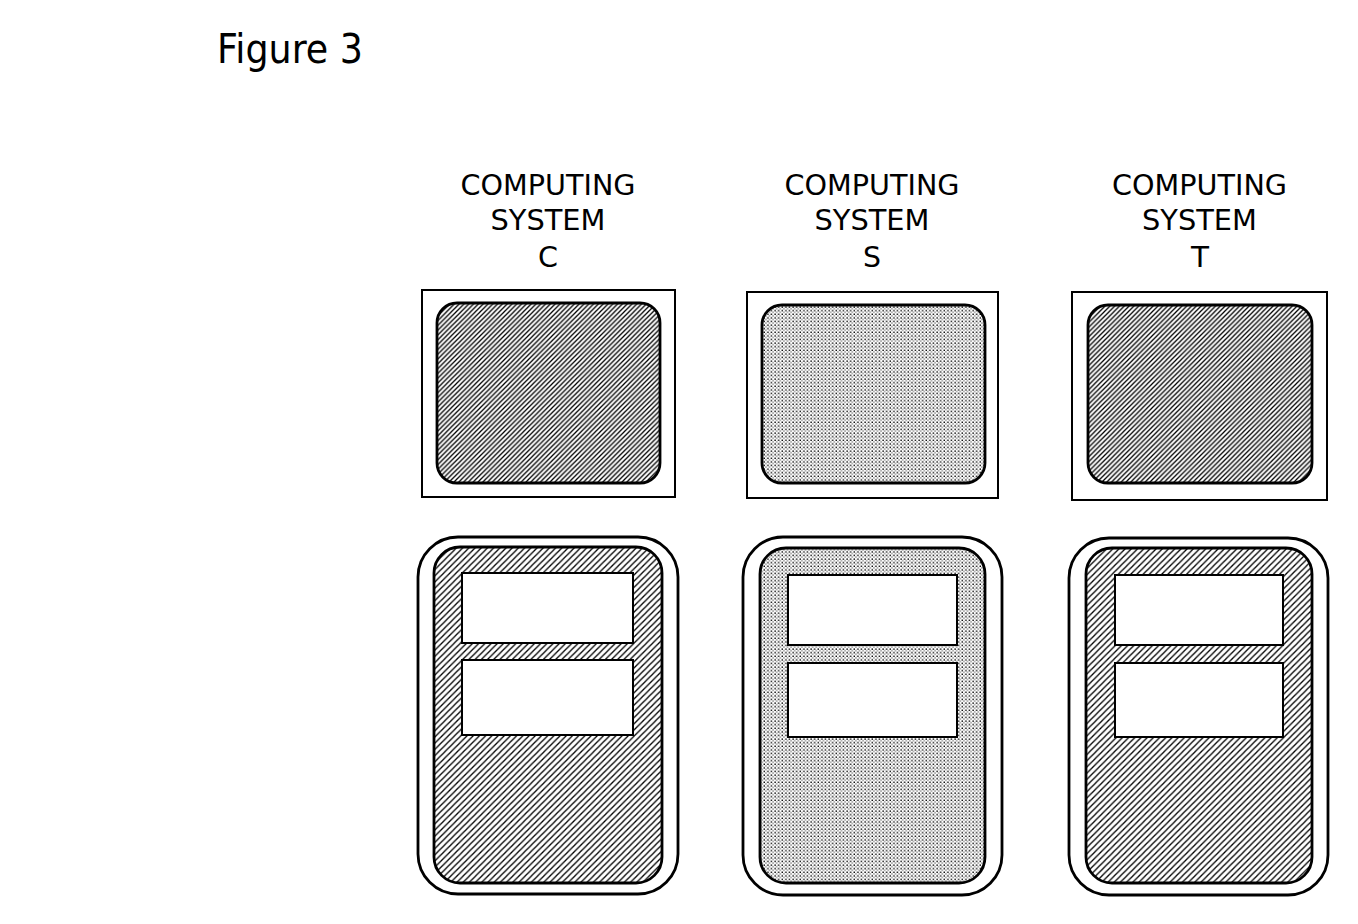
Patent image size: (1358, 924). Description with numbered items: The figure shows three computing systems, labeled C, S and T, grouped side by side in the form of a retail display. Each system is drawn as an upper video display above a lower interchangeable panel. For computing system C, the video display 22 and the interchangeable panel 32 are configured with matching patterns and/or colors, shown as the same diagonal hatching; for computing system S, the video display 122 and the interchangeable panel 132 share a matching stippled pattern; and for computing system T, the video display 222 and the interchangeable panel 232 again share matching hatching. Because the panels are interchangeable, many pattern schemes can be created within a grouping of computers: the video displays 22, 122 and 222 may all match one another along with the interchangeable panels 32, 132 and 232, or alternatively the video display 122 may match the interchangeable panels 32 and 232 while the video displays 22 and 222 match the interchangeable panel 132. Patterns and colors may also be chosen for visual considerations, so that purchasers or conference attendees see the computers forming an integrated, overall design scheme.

The video display 22 is at (548, 393).
The video display 122 is at (872, 395).
The video display 222 is at (1199, 396).
The interchangeable panel 32 is at (548, 715).
The interchangeable panel 132 is at (872, 716).
The interchangeable panel 232 is at (1198, 716).